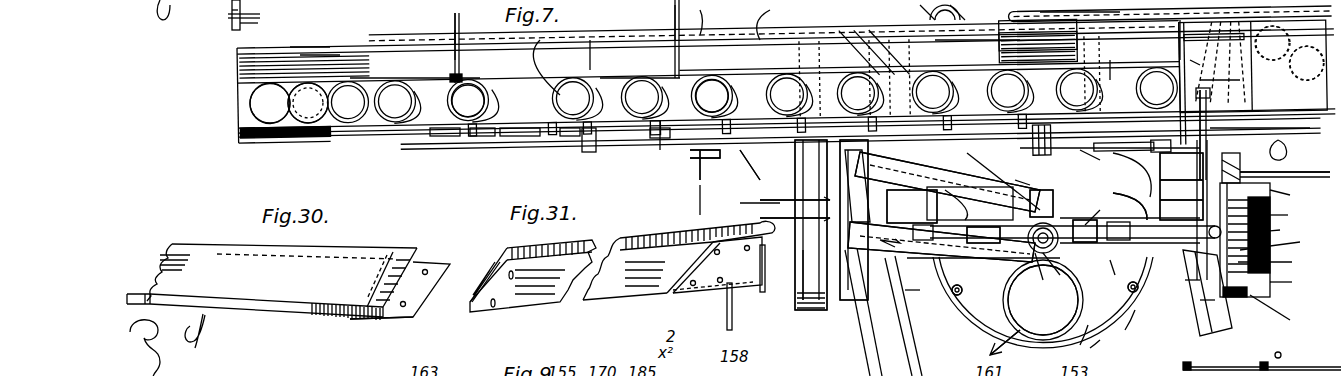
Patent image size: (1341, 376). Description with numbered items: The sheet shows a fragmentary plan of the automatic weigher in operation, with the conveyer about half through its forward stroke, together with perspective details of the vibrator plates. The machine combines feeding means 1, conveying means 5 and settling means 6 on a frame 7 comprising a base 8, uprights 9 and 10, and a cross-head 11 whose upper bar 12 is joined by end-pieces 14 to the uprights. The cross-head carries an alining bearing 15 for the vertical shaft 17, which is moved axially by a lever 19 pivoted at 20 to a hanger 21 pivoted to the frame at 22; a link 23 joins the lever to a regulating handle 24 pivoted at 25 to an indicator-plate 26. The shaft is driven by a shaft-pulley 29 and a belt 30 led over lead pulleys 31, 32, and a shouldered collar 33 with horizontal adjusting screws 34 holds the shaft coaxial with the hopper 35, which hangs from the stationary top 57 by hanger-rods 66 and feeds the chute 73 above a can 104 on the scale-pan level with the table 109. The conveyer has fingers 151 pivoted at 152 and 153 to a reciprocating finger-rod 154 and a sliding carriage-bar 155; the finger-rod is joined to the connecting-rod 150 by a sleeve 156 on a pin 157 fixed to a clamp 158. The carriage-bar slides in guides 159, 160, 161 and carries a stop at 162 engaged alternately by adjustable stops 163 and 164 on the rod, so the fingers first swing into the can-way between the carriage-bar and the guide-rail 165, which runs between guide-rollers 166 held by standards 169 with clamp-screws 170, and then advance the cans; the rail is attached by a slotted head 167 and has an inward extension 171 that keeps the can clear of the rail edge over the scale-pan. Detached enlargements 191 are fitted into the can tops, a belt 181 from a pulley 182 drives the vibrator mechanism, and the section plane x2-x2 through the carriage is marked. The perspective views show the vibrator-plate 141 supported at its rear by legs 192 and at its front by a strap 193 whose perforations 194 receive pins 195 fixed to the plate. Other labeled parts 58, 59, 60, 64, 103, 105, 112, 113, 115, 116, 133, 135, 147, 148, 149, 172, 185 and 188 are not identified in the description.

In FIG. 7, the feeding means 1 is at (1000, 346).
In FIG. 7, the conveying means 5 is at (1068, 162).
In FIG. 7, the settling means 6 is at (698, 20).
In FIG. 7, the frame 7 is at (795, 195).
In FIG. 7, the base 8 is at (1178, 307).
In FIG. 7, the upright 9 is at (1280, 215).
In FIG. 7, the upright 10 is at (792, 213).
In FIG. 7, the cross-head 11 is at (939, 206).
In FIG. 7, the upper bar 12 is at (1016, 183).
In FIG. 7, the end-pieces 14 is at (1007, 208).
In FIG. 7, the alining bearing 15 is at (963, 284).
In FIG. 7, the vertical shaft 17 is at (1110, 276).
In FIG. 7, the lever 19 is at (1190, 285).
In FIG. 7, the pivot 20 is at (1097, 210).
In FIG. 7, the hanger 21 is at (1126, 198).
In FIG. 7, the pivot 22 is at (1083, 243).
In FIG. 7, the link 23 is at (1277, 230).
In FIG. 7, the regulating handle 24 is at (1205, 93).
In FIG. 7, the pivot 25 is at (1291, 282).
In FIG. 7, the indicator-plate 26 is at (1243, 180).
In FIG. 7, the shaft-pulley 29 is at (983, 237).
In FIG. 7, the belt 30 is at (921, 299).
In FIG. 7, the lead pulley 31 is at (762, 167).
In FIG. 7, the lead pulley 32 is at (845, 250).
In FIG. 7, the shouldered collar 33 is at (1030, 272).
In FIG. 7, the horizontal adjusting screws 34 is at (1060, 235).
In FIG. 7, the hopper 35 is at (1112, 347).
In FIG. 7, the stationary top 57 is at (1080, 347).
In FIG. 7, the pin 58 is at (1133, 290).
In FIG. 7, the lower bar 59 is at (1003, 251).
In FIG. 7, the inner wheel 60 is at (1043, 300).
In FIG. 7, the crank pin 64 is at (1063, 197).
In FIG. 7, the hanger-rods 66 is at (938, 322).
In FIG. 7, the chute 73 is at (1003, 181).
In FIG. 7, the hook 103 is at (1294, 150).
In FIG. 7, the can 104 is at (310, 125).
In FIG. 7, the base pin 105 is at (1282, 328).
In FIG. 7, the table 109 is at (752, 23).
In FIG. 7, the drum base 112 is at (1284, 313).
In FIG. 7, the drum shell 113 is at (1280, 262).
In FIG. 7, the drum teeth 115 is at (1284, 242).
In FIG. 7, the drum top 116 is at (1295, 198).
In FIG. 7, the housing bottom 133 is at (1225, 203).
In FIG. 7, the housing plate 135 is at (1181, 188).
In FIG. 31, the vibrator-plate 141 is at (637, 278).
In FIG. 7, the housing 147 is at (1179, 186).
In FIG. 30, the board 148 is at (298, 284).
In FIG. 7, the rail 149 is at (1100, 12).
In FIG. 7, the connecting-rod 150 is at (965, 40).
In FIG. 7, the fingers 151 is at (520, 75).
In FIG. 7, the pivot 152 is at (562, 135).
In FIG. 7, the pivot 153 is at (662, 140).
In FIG. 7, the finger-rod 154 is at (340, 30).
In FIG. 7, the carriage-bar 155 is at (520, 138).
In FIG. 7, the sleeve 156 is at (708, 160).
In FIG. 7, the pin 157 is at (240, 23).
In FIG. 7, the clamp 158 is at (232, 10).
In FIG. 7, the guide 159 is at (1217, 370).
In FIG. 7, the guide 160 is at (595, 143).
In FIG. 7, the guide 161 is at (340, 150).
In FIG. 7, the stop 162 is at (1217, 80).
In FIG. 7, the adjustable stop 163 is at (1210, 130).
In FIG. 7, the adjustable stop 164 is at (1110, 75).
In FIG. 7, the guide-rail 165 is at (285, 44).
In FIG. 7, the guide-rollers 166 is at (440, 72).
In FIG. 7, the slotted head 167 is at (1180, 41).
In FIG. 7, the standards 169 is at (455, 35).
In FIG. 7, the clamp-screws 170 is at (455, 40).
In FIG. 7, the inward extension 171 is at (1050, 45).
In FIG. 7, the clip 172 is at (1190, 62).
In FIG. 7, the belt 181 is at (808, 310).
In FIG. 7, the pulley 182 is at (850, 260).
In FIG. 7, the bracket 185 is at (705, 170).
In FIG. 7, the roller 188 is at (1265, 49).
In FIG. 7, the detached enlargements 191 is at (590, 40).
In FIG. 31, the legs 192 is at (729, 285).
In FIG. 30, the strap 193 is at (413, 316).
In FIG. 30, the perforations 194 is at (410, 292).
In FIG. 31, the pins 195 is at (510, 282).
In FIG. 7, the section line x2- x2 is at (698, 200).